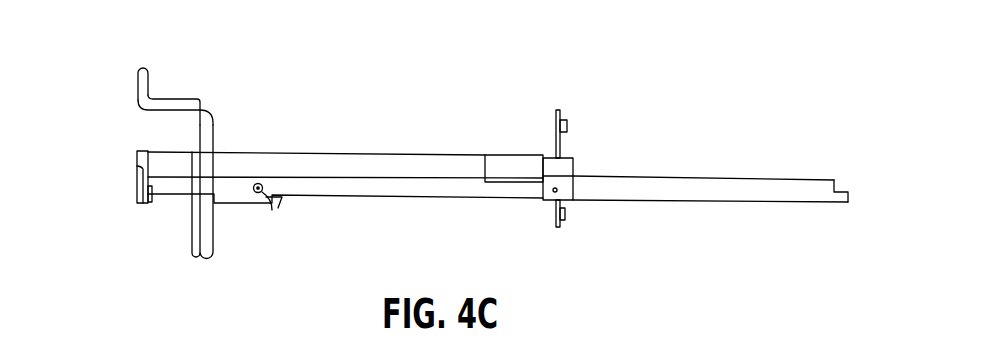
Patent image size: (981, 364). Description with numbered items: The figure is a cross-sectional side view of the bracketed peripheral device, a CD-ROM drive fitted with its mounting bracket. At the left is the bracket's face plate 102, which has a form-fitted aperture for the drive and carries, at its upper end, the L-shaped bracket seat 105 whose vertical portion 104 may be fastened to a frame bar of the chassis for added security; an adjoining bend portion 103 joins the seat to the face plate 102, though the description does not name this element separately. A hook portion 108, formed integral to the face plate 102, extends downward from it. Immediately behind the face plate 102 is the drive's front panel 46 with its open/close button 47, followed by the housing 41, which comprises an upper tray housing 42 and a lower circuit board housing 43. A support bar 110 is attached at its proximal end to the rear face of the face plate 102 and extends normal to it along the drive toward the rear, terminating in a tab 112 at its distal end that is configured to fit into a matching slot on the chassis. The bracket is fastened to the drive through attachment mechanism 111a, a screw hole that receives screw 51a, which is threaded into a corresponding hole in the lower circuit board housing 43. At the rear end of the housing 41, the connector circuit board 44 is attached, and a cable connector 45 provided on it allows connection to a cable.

The housing 41 is at (295, 153).
The upper tray housing 42 is at (423, 158).
The lower circuit board housing 43 is at (357, 197).
The connector circuit board 44 is at (560, 108).
The cable connector 45 is at (567, 218).
The front panel 46 is at (143, 165).
The open/close button 47 is at (152, 190).
The screw 51a is at (255, 193).
The face plate 102 is at (200, 125).
The bend portion 103 is at (200, 98).
The vertical portion 104 is at (140, 69).
The bracket seat 105 is at (115, 83).
The hook portion 108 is at (193, 259).
The support bar 110 is at (677, 180).
The attachment mechanism 111a is at (266, 203).
The tab 112 is at (848, 195).